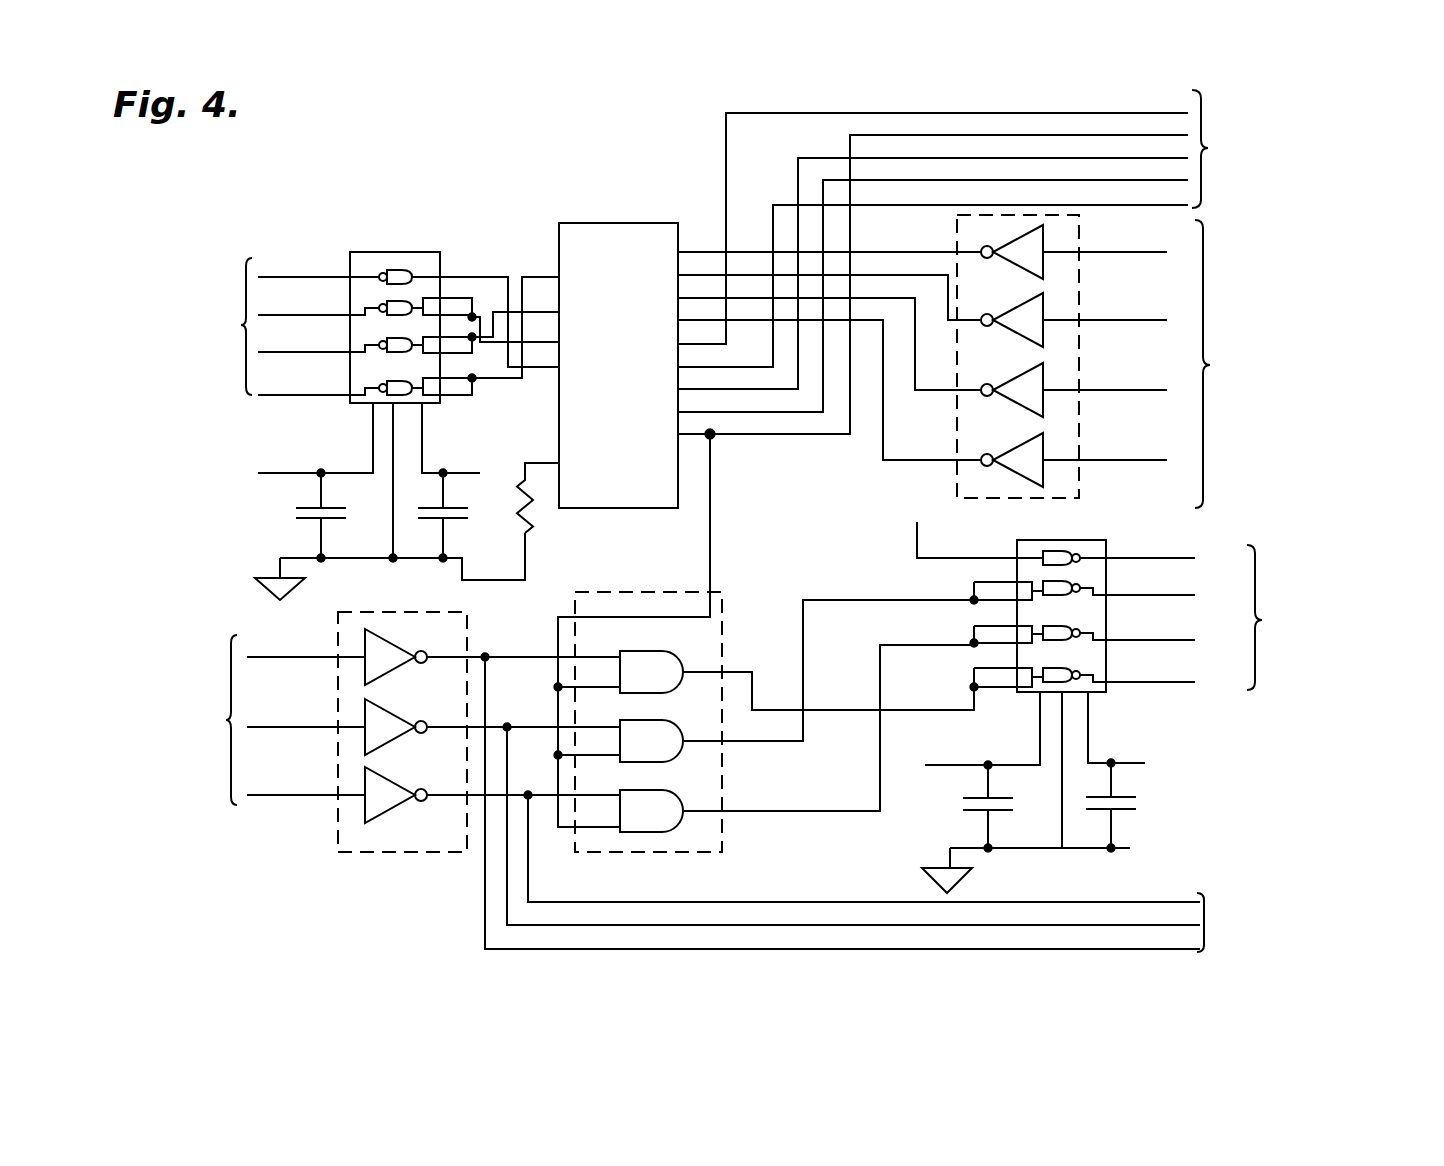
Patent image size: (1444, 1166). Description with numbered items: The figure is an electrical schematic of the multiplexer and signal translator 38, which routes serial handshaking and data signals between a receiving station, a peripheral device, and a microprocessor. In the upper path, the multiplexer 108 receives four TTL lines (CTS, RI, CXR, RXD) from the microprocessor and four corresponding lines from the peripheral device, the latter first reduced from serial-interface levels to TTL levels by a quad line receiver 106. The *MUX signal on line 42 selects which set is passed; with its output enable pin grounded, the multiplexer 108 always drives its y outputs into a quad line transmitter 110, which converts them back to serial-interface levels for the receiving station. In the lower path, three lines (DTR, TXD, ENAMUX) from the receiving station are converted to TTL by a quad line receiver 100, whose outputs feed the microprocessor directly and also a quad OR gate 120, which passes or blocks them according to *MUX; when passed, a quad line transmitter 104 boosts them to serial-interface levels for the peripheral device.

The multiplexer and signal translator 38 is at (493, 153).
The quad line transmitter 110 is at (396, 252).
The multiplexer 108 is at (608, 223).
The line 42 is at (795, 436).
The quad line receiver 106 is at (1082, 268).
The quad line transmitter 104 is at (1088, 540).
The quad line receiver 100 is at (360, 852).
The quad OR gate 120 is at (722, 852).